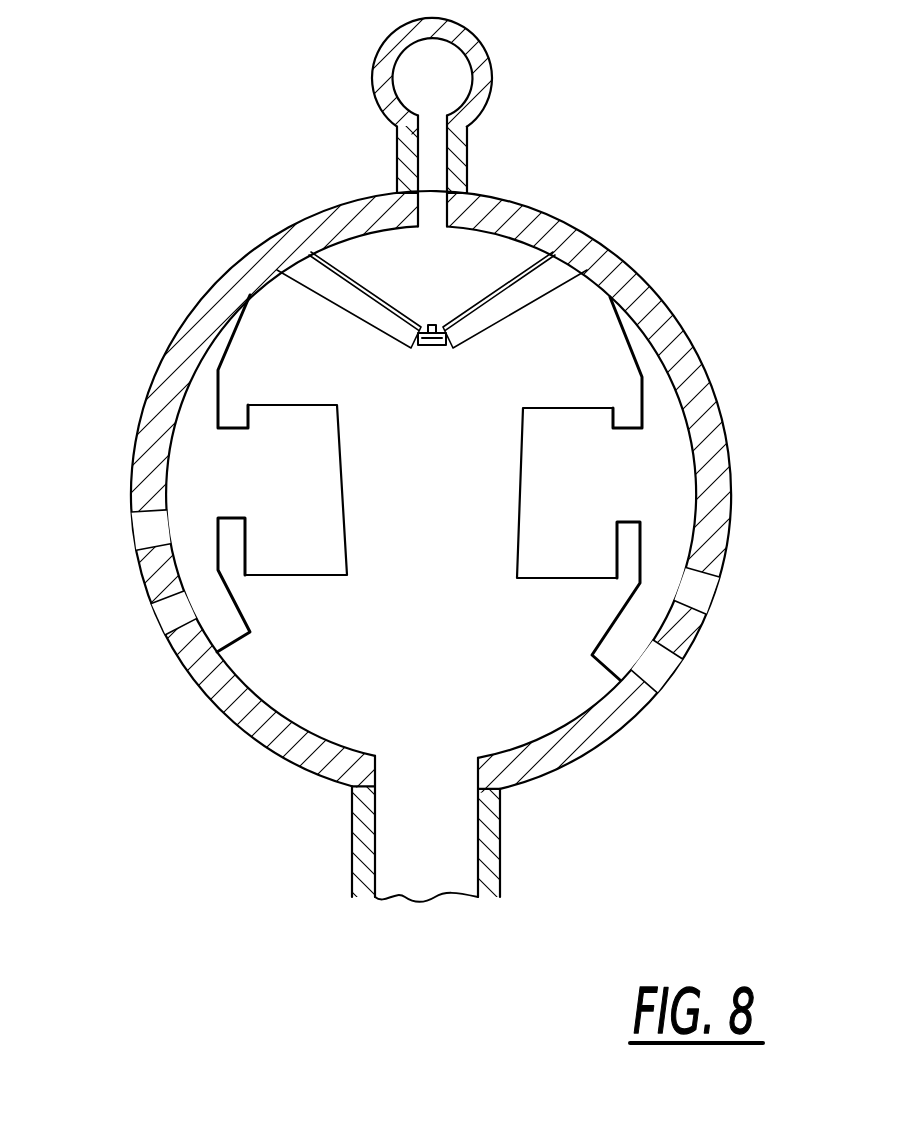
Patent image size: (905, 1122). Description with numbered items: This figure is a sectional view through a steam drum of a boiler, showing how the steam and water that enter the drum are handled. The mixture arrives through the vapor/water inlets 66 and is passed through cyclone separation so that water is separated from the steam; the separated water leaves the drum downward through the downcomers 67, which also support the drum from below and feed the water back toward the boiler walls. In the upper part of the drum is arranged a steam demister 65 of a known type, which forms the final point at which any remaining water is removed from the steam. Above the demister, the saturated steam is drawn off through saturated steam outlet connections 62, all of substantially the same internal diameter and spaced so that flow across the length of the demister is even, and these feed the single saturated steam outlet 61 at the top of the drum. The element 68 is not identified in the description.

The steam outlet 61 is at (478, 82).
The saturated steam outlet connection 62 is at (435, 157).
The steam demister 65 is at (528, 285).
The vapor/water inlet 66 is at (165, 615).
The downcomer 67 is at (447, 845).
The block member with retaining brackets 68 is at (583, 555).